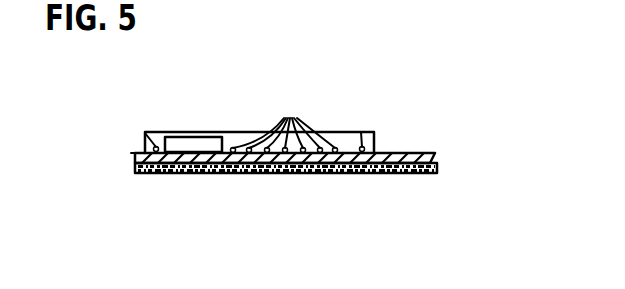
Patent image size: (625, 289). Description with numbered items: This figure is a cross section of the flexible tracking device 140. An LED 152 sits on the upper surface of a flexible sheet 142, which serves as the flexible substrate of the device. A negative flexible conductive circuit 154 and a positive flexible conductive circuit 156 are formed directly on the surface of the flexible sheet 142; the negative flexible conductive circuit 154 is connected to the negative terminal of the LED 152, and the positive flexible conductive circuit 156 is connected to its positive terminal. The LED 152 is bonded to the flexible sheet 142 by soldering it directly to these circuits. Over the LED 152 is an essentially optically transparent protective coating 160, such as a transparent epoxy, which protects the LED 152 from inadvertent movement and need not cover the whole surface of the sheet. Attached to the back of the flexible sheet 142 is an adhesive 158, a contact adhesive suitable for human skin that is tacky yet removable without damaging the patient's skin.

The flexible tracking device 140 is at (437, 158).
The flexible sheet 142 is at (405, 153).
The LED 152 is at (178, 137).
The negative flexible conductive circuit 154 is at (284, 119).
The positive flexible conductive circuit 156 is at (145, 132).
The adhesive 158 is at (413, 174).
The protective coating 160 is at (244, 132).